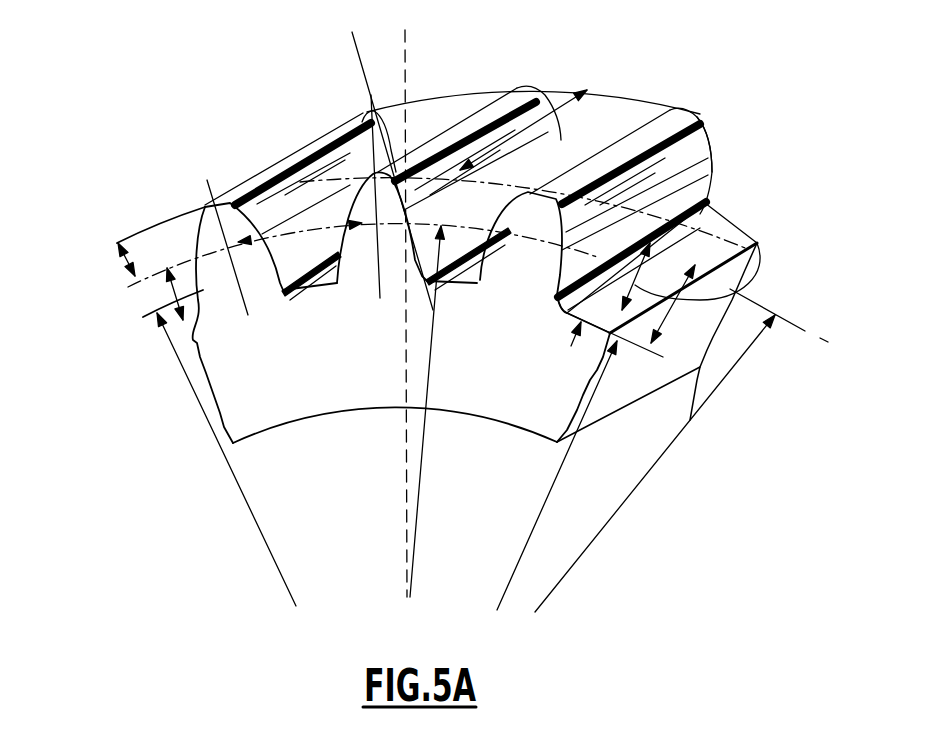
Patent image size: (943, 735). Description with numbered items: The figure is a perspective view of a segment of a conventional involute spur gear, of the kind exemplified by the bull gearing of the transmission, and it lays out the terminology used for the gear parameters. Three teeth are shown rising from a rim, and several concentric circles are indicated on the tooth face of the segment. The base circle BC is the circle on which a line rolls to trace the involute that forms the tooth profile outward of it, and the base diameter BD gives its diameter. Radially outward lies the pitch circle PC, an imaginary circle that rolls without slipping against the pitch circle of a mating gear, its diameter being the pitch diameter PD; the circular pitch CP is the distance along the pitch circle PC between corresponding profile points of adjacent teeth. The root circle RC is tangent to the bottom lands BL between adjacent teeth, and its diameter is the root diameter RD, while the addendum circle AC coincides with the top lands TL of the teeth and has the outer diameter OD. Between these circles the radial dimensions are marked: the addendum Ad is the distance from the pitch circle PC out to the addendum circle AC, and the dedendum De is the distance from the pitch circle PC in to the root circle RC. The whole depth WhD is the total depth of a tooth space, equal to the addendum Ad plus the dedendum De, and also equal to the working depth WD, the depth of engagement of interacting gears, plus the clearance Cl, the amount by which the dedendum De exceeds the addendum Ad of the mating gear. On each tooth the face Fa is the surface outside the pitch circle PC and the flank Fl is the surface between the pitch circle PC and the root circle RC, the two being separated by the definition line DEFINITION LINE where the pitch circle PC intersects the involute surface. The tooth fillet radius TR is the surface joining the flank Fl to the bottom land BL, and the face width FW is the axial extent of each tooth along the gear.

The face-flank definition line DEFINITION LINE is at (574, 185).
The face width FW is at (518, 132).
The top land TL is at (670, 122).
The face Fa is at (702, 114).
The working depth WD is at (645, 240).
The flank Fl is at (697, 213).
The tooth fillet radius TR is at (712, 207).
The bottom land BL is at (728, 240).
The whole depth WhD is at (740, 290).
The clearance Cl is at (572, 336).
The root circle RC is at (720, 258).
The outer diameter OD is at (624, 503).
The root diameter RD is at (524, 550).
The pitch diameter PD is at (422, 456).
The base diameter BD is at (254, 517).
The base circle BC is at (155, 308).
The addendum Ad is at (126, 260).
The addendum circle AC is at (153, 218).
The dedendum De is at (185, 290).
The pitch circle PC is at (180, 262).
The circular pitch CP is at (290, 162).